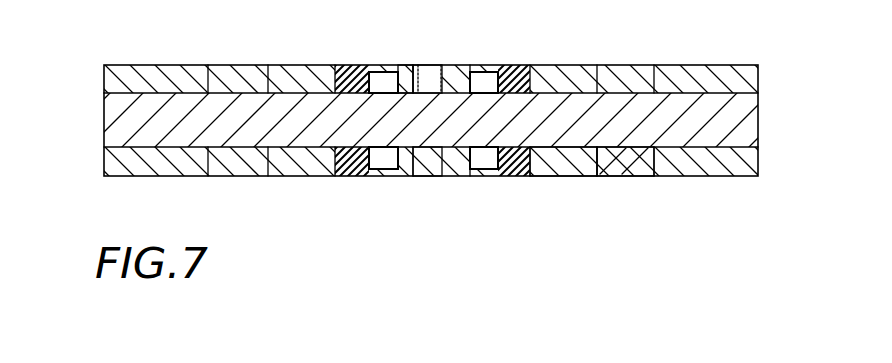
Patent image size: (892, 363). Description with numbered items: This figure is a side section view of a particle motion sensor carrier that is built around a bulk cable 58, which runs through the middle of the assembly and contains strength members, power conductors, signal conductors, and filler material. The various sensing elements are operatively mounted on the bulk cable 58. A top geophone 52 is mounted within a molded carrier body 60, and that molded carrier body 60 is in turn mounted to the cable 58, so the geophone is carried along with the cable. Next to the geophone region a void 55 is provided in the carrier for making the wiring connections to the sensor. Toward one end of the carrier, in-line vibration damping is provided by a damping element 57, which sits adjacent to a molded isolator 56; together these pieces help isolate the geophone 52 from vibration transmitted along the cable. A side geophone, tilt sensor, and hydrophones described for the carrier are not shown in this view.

The top geophone 52 is at (443, 65).
The void 55 is at (493, 65).
The molded isolator 56 is at (630, 177).
The in-line vibration damping element 57 is at (568, 177).
The bulk cable 58 is at (105, 114).
The molded carrier body 60 is at (405, 65).